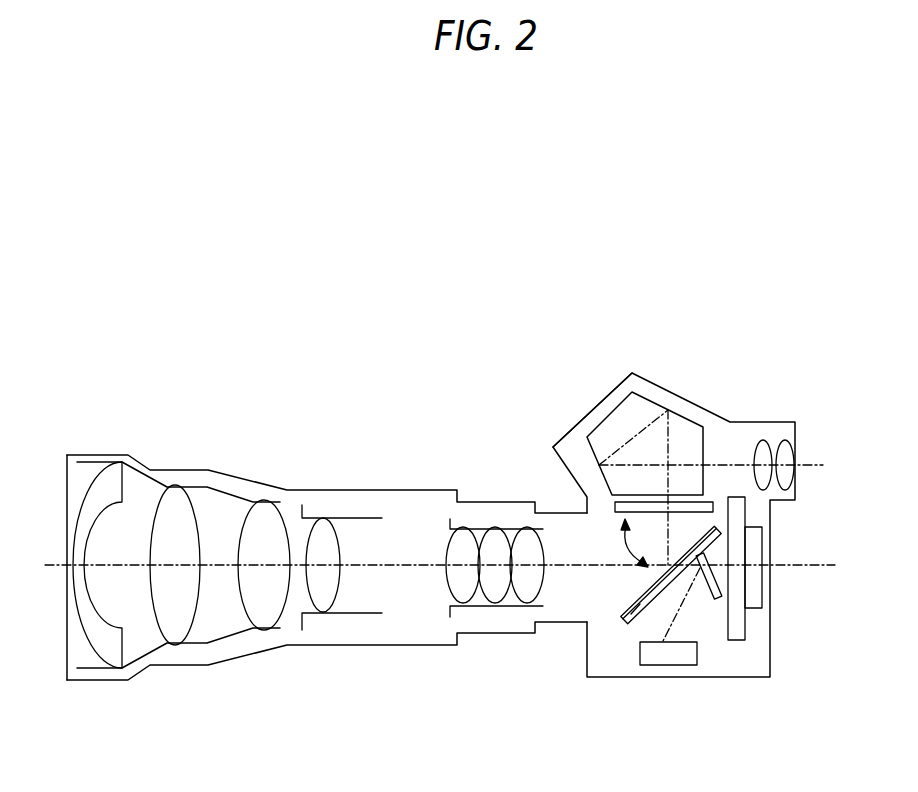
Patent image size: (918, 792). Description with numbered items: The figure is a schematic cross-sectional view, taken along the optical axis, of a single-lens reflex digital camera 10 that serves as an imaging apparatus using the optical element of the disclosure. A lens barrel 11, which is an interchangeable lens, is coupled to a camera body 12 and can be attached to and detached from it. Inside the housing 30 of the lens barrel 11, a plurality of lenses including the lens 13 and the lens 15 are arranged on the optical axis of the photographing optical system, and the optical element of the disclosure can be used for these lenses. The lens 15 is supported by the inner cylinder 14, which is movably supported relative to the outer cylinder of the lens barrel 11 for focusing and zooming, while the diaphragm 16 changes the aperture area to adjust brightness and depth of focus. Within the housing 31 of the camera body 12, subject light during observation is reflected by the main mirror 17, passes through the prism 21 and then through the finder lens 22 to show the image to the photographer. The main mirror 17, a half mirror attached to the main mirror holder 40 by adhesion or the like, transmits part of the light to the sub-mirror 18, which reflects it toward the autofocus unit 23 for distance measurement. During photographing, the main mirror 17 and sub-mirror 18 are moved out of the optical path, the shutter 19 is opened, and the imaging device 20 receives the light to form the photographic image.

The single-lens reflex digital camera 10 is at (538, 250).
The lens barrel 11 is at (70, 322).
The camera body 12 is at (572, 322).
The lens 13 is at (108, 478).
The housing 30 is at (177, 468).
The inner cylinder 14 is at (343, 519).
The lens 15 is at (323, 603).
The diaphragm 16 is at (450, 533).
The housing 31 is at (577, 420).
The prism 21 is at (682, 428).
The finder lens 22 is at (787, 452).
The main mirror 17 is at (622, 610).
The main mirror holder 40 is at (640, 608).
The sub-mirror 18 is at (715, 585).
The autofocus (AF) unit 23 is at (675, 660).
The shutter 19 is at (735, 615).
The imaging device 20 is at (757, 578).